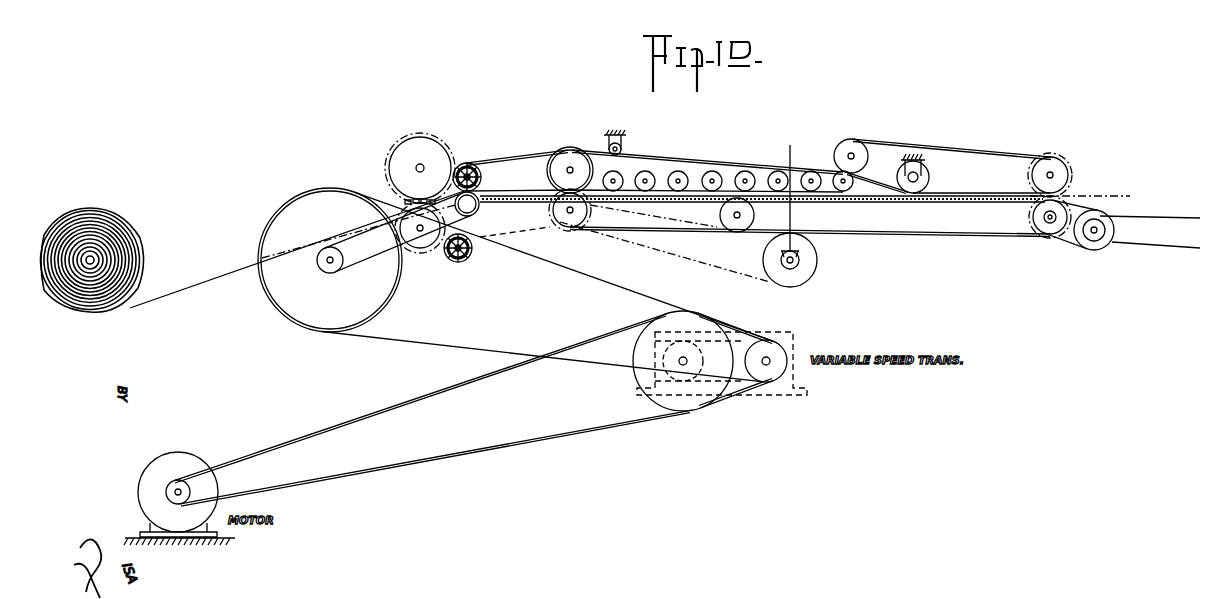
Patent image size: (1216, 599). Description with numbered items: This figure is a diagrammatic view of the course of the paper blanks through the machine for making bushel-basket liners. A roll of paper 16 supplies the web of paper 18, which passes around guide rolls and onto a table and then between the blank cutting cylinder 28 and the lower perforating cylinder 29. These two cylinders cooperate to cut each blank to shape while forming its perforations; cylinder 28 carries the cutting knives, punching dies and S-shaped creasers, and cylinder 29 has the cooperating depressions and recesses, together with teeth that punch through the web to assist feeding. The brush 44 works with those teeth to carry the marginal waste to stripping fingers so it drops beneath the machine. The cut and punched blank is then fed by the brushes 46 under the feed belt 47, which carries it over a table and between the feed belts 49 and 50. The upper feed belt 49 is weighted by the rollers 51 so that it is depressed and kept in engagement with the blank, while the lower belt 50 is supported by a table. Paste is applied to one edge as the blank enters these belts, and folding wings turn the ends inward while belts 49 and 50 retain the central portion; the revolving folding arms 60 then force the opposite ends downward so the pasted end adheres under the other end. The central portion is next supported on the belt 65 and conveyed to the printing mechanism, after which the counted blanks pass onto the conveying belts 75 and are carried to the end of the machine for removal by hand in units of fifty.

The roll of paper 16 is at (118, 220).
The web of paper 18 is at (219, 265).
The blank cutting cylinder 28 is at (445, 152).
The perforating cylinder 29 is at (428, 250).
The brush 44 is at (467, 254).
The brushes 46 is at (477, 168).
The feed belt 47 is at (512, 164).
The feed belt 49 is at (672, 164).
The feed belt 50 is at (637, 204).
The rollers 51 is at (716, 172).
The revolving folding arms 60 is at (795, 213).
The belt 65 is at (1000, 186).
The conveying belts 75 is at (1160, 215).